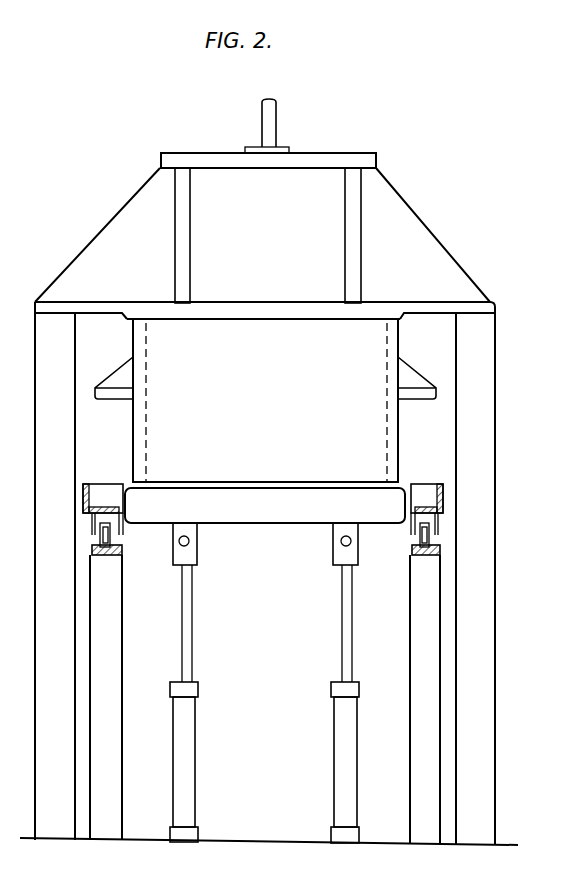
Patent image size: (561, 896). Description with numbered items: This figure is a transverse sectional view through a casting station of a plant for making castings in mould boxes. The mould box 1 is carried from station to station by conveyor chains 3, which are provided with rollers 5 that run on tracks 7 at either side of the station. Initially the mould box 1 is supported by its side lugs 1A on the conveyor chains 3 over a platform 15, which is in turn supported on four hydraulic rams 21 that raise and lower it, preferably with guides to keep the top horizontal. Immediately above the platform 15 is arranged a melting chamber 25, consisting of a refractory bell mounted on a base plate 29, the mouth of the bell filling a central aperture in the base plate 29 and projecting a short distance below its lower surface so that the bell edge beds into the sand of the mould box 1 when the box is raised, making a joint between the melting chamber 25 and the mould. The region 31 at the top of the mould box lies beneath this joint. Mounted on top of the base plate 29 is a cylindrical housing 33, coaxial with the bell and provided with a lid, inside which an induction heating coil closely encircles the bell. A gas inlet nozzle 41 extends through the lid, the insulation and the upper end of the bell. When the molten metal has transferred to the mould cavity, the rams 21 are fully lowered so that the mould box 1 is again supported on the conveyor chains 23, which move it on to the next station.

The mould box 1 is at (398, 343).
The side lugs 1A is at (120, 388).
The conveyor chains 3 is at (92, 528).
The rollers 5 is at (115, 538).
The tracks 7 is at (120, 550).
The platform 15 is at (293, 508).
The hydraulic rams 21 is at (192, 651).
The conveyor chains 23 is at (193, 488).
The melting chamber 25 is at (294, 258).
The base plate 29 is at (110, 311).
The container top rim 31 is at (218, 318).
The cylindrical housing 33 is at (360, 273).
The gas inlet nozzle 41 is at (273, 119).